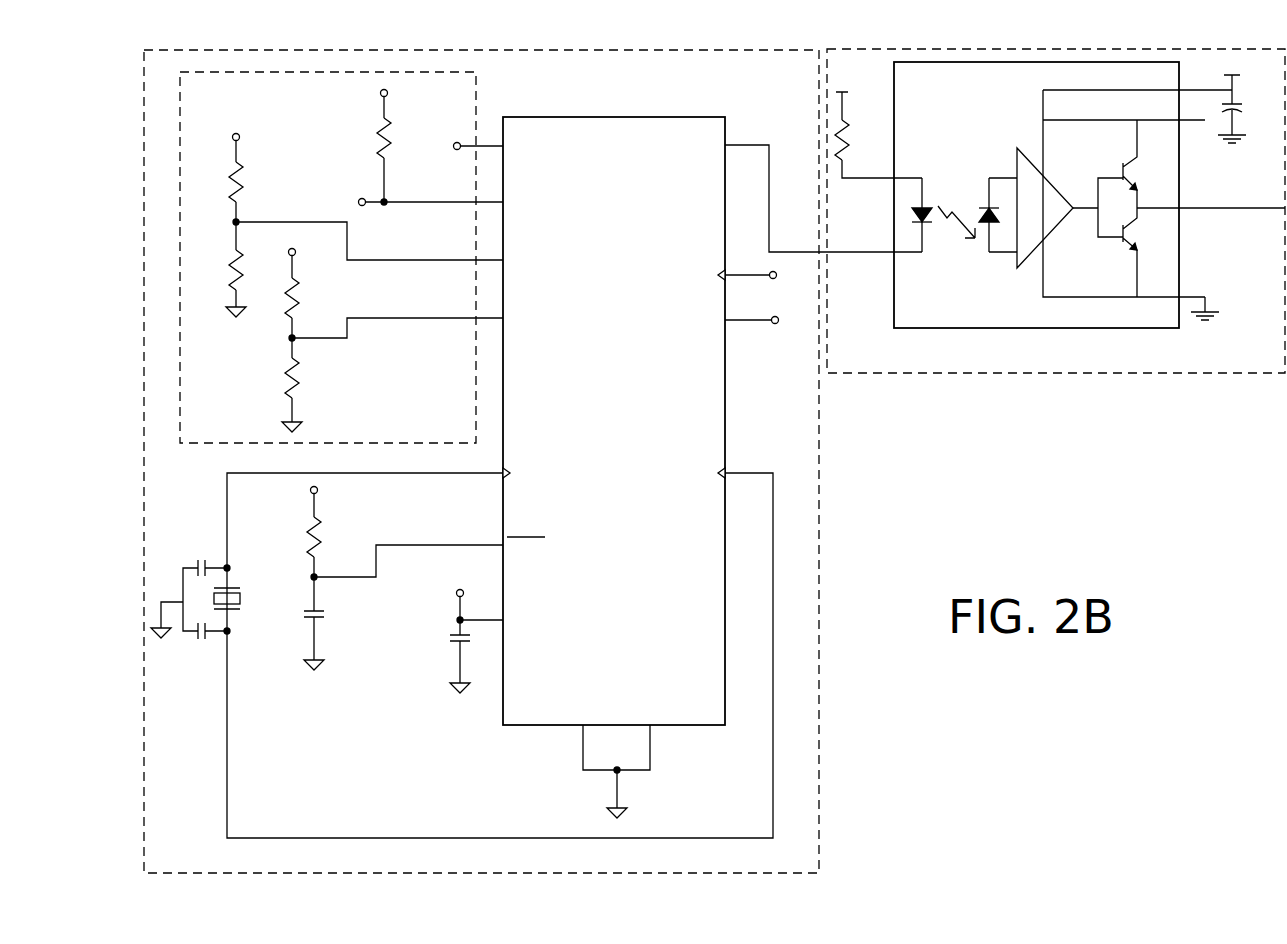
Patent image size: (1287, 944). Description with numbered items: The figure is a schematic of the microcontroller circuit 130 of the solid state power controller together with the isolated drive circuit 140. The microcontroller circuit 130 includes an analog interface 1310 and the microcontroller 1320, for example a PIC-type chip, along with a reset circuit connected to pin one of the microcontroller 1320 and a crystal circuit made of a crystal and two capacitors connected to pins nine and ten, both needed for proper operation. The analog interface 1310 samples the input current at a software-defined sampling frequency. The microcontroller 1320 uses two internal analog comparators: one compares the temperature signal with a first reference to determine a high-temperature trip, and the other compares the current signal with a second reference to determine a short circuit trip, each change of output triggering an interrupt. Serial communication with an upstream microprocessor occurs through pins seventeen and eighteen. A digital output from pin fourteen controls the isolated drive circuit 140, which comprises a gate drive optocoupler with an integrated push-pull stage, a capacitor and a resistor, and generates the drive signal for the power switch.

The microcontroller circuit 130 is at (142, 136).
The analog interface 1310 is at (478, 98).
The microcontroller 1320 is at (625, 117).
The isolated drive circuit 140 is at (973, 374).